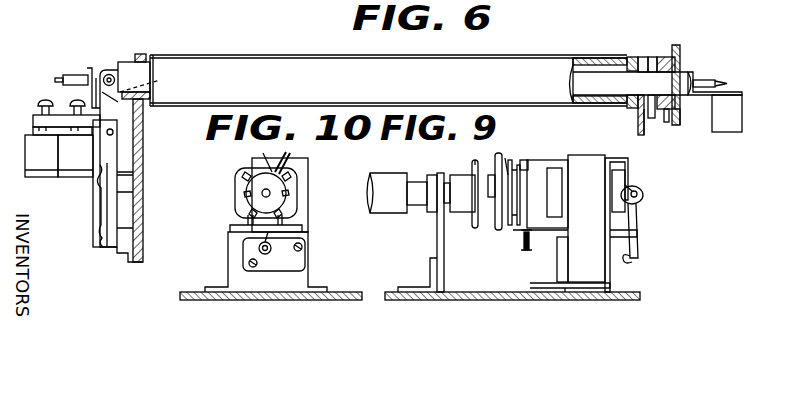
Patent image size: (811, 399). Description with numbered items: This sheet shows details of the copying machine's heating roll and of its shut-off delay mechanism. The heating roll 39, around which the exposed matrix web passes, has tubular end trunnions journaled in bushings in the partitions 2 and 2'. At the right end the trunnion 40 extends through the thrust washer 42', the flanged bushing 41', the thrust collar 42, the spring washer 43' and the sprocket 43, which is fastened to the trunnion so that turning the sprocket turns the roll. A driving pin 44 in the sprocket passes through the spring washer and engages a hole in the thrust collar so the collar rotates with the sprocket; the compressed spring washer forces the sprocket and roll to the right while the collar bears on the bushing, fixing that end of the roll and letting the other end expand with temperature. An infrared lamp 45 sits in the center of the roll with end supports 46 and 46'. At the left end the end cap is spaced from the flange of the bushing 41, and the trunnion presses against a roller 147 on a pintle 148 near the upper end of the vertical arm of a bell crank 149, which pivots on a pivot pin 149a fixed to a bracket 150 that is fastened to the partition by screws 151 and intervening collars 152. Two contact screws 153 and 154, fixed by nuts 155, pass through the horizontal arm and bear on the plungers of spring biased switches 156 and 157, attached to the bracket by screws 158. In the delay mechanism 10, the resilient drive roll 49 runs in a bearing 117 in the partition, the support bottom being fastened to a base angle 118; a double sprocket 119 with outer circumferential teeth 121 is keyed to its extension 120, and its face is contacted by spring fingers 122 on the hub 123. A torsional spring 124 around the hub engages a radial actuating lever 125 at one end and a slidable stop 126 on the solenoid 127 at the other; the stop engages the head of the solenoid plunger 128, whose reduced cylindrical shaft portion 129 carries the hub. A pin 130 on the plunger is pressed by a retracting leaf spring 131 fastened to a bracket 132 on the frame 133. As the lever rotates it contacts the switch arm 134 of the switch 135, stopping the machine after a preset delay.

In FIG. 6, the partition 2 is at (125, 267).
In FIG. 6, the partition 2' is at (634, 131).
In FIG. 9, the partition 2' is at (424, 232).
In FIG. 9, the drive assembly 10 is at (526, 145).
In FIG. 6, the heating roll 39 is at (371, 81).
In FIG. 6, the trunnion 40 is at (115, 62).
In FIG. 6, the bushing 41 is at (136, 42).
In FIG. 6, the flanged bushing 41' is at (626, 67).
In FIG. 6, the thrust collar 42 is at (656, 95).
In FIG. 6, the thrust washer 42' is at (627, 96).
In FIG. 6, the sprocket 43 is at (687, 126).
In FIG. 6, the spring washer 43' is at (668, 134).
In FIG. 6, the driving pin 44 is at (660, 57).
In FIG. 6, the infrared lamp 45 is at (576, 78).
In FIG. 6, the end support 46 is at (77, 79).
In FIG. 6, the end support 46' is at (741, 101).
In FIG. 9, the resilient drive roll 49 is at (384, 173).
In FIG. 9, the bearing 117 is at (424, 206).
In FIG. 9, the base angle 118 is at (416, 280).
In FIG. 9, the double sprocket 119 is at (460, 214).
In FIG. 9, the extension 120 is at (432, 175).
In FIG. 9, the outer circumferential teeth 121 is at (445, 180).
In FIG. 10, the spring fingers 122 is at (243, 196).
In FIG. 9, the spring fingers 122 is at (477, 162).
In FIG. 9, the hub 123 is at (503, 232).
In FIG. 9, the torsional spring 124 is at (512, 160).
In FIG. 10, the radial actuating lever 125 is at (290, 153).
In FIG. 9, the radial actuating lever 125 is at (530, 160).
In FIG. 10, the slidable stop 126 is at (262, 154).
In FIG. 9, the slidable stop 126 is at (565, 155).
In FIG. 9, the solenoid 127 is at (557, 200).
In FIG. 9, the solenoid plunger 128 is at (634, 190).
In FIG. 9, the reduced cylindrical shaft portion 129 is at (527, 196).
In FIG. 9, the pin 130 is at (643, 196).
In FIG. 9, the retracting leaf spring 131 is at (638, 222).
In FIG. 9, the bracket 132 is at (633, 260).
In FIG. 9, the frame 133 is at (612, 283).
In FIG. 10, the switch arm 134 is at (259, 250).
In FIG. 9, the switch arm 134 is at (524, 250).
In FIG. 10, the switch 135 is at (305, 260).
In FIG. 9, the switch 135 is at (543, 258).
In FIG. 6, the roller 147 is at (158, 72).
In FIG. 6, the pintle 148 is at (106, 75).
In FIG. 6, the bell crank 149 is at (138, 100).
In FIG. 6, the pivot pin 149a is at (113, 132).
In FIG. 6, the bracket 150 is at (100, 172).
In FIG. 6, the screws 151 is at (102, 208).
In FIG. 6, the collars 152 is at (142, 200).
In FIG. 6, the contact screw 153 is at (42, 102).
In FIG. 6, the contact screw 154 is at (74, 100).
In FIG. 6, the nuts 155 is at (38, 114).
In FIG. 6, the spring biased switch 156 is at (54, 163).
In FIG. 6, the spring biased switch 157 is at (87, 163).
In FIG. 6, the screws 158 is at (20, 158).